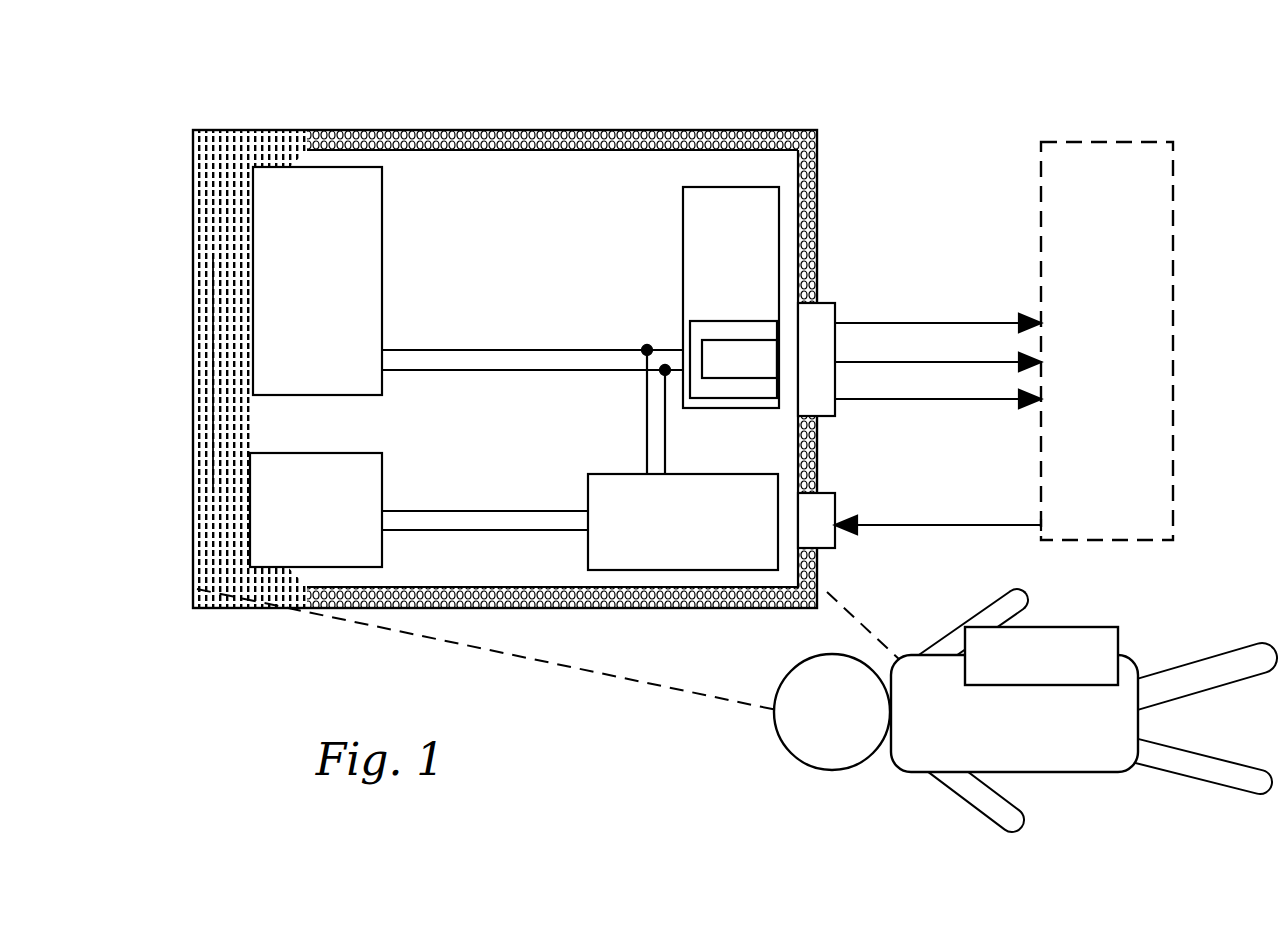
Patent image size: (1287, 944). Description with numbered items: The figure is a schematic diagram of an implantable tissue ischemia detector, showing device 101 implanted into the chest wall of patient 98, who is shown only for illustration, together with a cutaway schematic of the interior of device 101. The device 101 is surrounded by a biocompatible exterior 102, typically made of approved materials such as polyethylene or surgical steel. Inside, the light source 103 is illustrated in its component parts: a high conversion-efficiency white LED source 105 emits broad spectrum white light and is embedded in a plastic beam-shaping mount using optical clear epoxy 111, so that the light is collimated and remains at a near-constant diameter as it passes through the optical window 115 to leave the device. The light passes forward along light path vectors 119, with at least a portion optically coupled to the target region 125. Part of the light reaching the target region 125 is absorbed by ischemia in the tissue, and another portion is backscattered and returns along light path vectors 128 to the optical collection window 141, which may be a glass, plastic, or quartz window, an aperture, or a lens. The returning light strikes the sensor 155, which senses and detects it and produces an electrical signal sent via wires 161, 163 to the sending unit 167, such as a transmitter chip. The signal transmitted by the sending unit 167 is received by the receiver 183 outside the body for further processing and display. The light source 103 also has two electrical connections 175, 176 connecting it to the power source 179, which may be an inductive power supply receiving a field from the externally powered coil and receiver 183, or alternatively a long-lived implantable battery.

The patient 98 is at (1018, 695).
The device 101 is at (649, 421).
The biocompatible exterior 102 is at (667, 145).
The light source 103 is at (701, 247).
The white LED source 105 is at (750, 380).
The optical clear epoxy 111 is at (738, 322).
The optical window 115 is at (836, 303).
The light path vectors 119 is at (908, 322).
The target region 125 is at (1073, 140).
The light path vectors 128 is at (928, 518).
The optical collection window 141 is at (833, 492).
The sensor 155 is at (638, 474).
The wire 161 is at (460, 530).
The wire 163 is at (398, 511).
The sending unit 167 is at (382, 470).
The electrical connection 175 is at (622, 350).
The electrical connection 176 is at (585, 370).
The power source 179 is at (325, 167).
The receiver 183 is at (1060, 625).